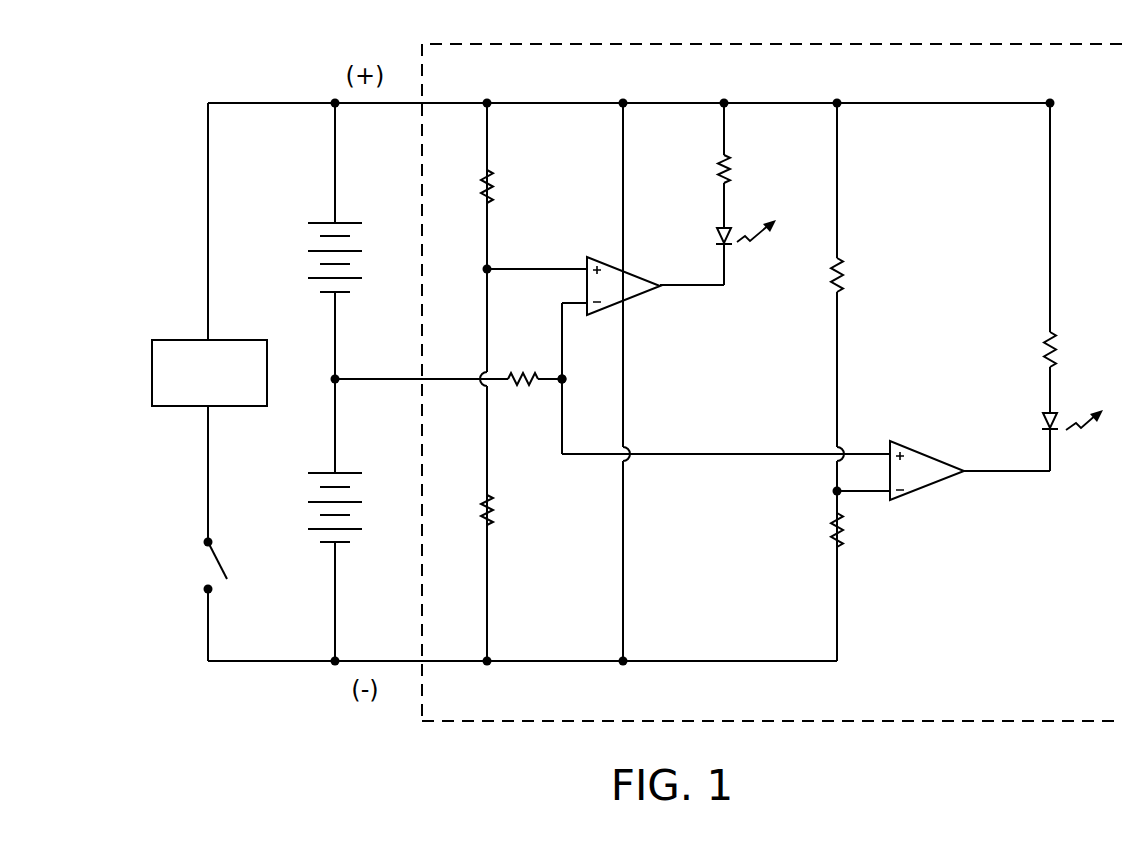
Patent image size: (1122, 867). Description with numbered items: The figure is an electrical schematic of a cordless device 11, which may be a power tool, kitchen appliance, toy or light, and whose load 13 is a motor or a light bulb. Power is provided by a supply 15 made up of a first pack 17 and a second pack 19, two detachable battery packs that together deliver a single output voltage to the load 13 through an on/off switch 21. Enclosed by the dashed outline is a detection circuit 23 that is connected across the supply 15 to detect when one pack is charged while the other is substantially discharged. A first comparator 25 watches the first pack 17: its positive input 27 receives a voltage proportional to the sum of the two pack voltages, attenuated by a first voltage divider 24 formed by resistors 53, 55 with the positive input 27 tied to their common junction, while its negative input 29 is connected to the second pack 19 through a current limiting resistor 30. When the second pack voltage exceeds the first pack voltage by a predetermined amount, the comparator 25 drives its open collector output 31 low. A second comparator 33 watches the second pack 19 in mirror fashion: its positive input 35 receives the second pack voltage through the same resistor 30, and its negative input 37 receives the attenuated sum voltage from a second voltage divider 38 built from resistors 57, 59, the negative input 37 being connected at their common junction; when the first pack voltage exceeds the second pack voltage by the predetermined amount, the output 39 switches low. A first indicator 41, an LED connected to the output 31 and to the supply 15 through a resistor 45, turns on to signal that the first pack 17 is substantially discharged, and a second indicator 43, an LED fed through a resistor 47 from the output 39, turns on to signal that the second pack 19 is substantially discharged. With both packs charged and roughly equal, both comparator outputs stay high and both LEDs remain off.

The device 11 is at (452, 753).
The load 13 is at (268, 373).
The power supply 15 is at (350, 406).
The first pack 17 is at (362, 253).
The second pack 19 is at (360, 507).
The on/off switch 21 is at (222, 565).
The detection circuit 23 is at (815, 44).
The first voltage divider 24 is at (528, 346).
The first comparator 25 is at (647, 262).
The positive input 27 is at (586, 265).
The negative input 29 is at (585, 308).
The current limiting resistor 30 is at (527, 378).
The open collector output 31 is at (668, 285).
The second comparator 33 is at (946, 448).
The positive input 35 is at (890, 452).
The negative input 37 is at (889, 495).
The second voltage divider 38 is at (833, 411).
The output 39 is at (968, 470).
The first indicator 41 is at (720, 234).
The second indicator 43 is at (1042, 415).
The resistor 45 is at (720, 168).
The resistor 47 is at (1048, 342).
The resistor 53 is at (490, 182).
The resistor 55 is at (492, 508).
The resistor 57 is at (845, 270).
The resistor 59 is at (836, 525).